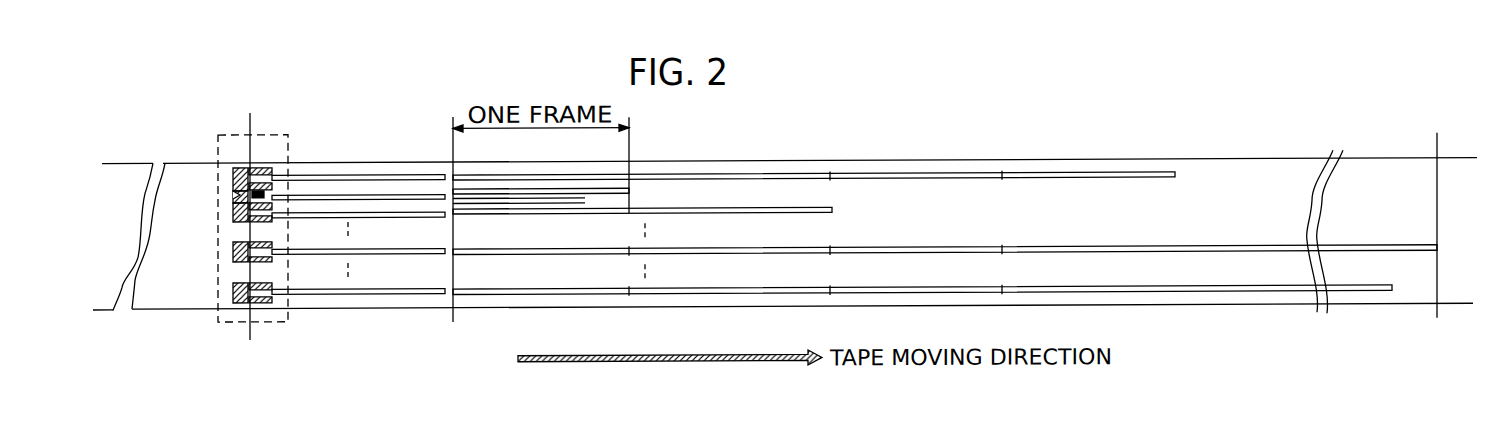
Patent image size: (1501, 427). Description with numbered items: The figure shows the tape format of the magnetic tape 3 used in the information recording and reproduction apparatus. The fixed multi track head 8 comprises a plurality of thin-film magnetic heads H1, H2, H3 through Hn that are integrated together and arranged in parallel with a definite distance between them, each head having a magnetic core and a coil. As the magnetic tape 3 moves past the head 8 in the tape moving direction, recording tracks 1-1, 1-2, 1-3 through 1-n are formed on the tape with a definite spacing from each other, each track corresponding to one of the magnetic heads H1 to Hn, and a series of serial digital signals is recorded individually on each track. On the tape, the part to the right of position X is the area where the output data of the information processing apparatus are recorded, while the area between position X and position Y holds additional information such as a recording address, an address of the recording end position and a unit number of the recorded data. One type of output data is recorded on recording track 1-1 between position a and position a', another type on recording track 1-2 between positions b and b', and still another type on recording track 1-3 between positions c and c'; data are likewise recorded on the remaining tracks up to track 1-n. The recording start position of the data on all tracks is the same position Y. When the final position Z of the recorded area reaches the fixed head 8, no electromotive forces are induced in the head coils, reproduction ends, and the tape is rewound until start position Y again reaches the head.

The magnetic tape 3 is at (1215, 163).
The multi track head 8 is at (225, 213).
The magnetic head H1 is at (233, 181).
The magnetic head H2 is at (233, 201).
The magnetic head H3 is at (233, 218).
The magnetic head Hn is at (233, 291).
The recording track 1-1 is at (413, 180).
The recording track 1-2 is at (363, 199).
The recording track 1-3 is at (315, 214).
The recording track 1-n is at (378, 295).
The position a is at (488, 156).
The position a' is at (1194, 175).
The position b is at (516, 221).
The position b' is at (645, 193).
The position c is at (475, 230).
The position c' is at (846, 210).
The position X is at (454, 236).
The position Y is at (249, 237).
The final position Z is at (1435, 242).